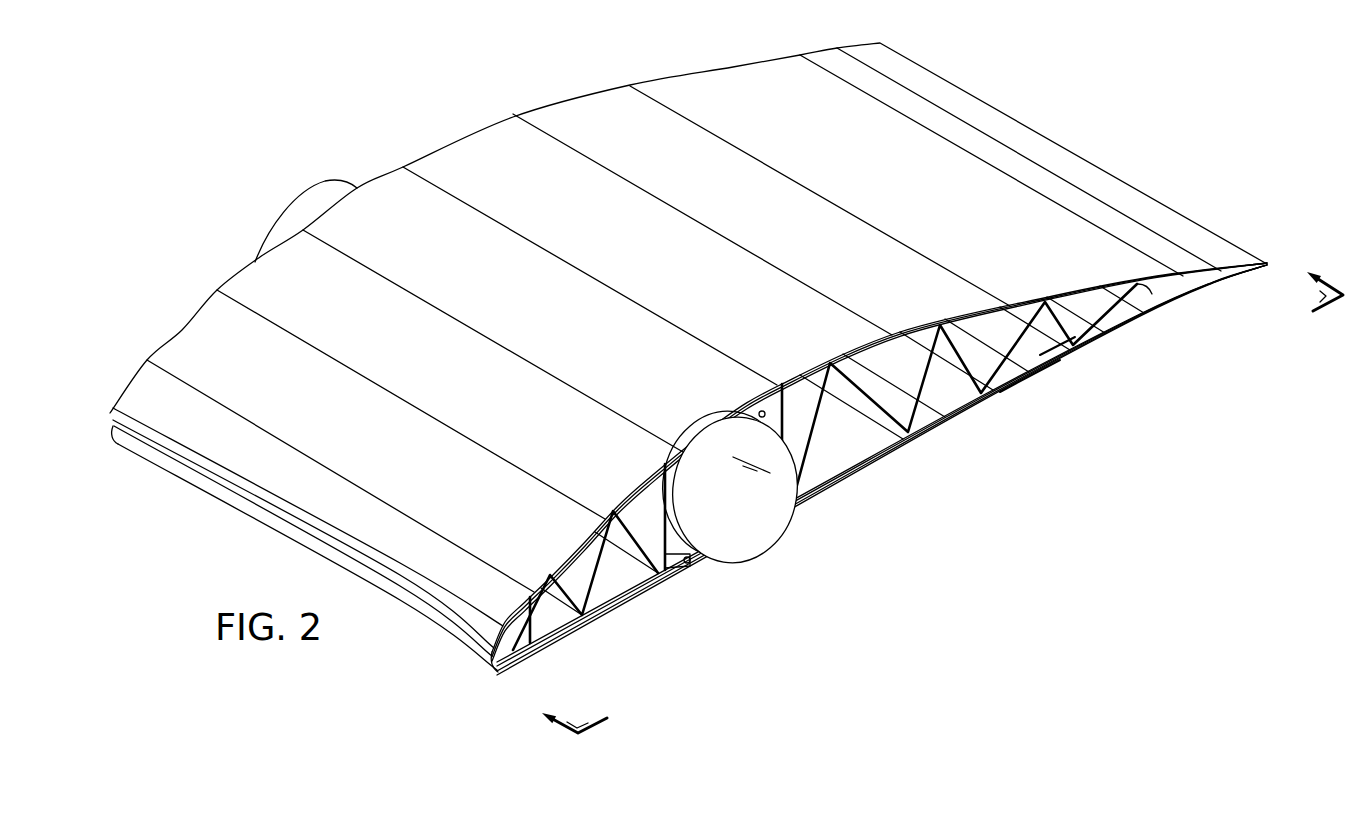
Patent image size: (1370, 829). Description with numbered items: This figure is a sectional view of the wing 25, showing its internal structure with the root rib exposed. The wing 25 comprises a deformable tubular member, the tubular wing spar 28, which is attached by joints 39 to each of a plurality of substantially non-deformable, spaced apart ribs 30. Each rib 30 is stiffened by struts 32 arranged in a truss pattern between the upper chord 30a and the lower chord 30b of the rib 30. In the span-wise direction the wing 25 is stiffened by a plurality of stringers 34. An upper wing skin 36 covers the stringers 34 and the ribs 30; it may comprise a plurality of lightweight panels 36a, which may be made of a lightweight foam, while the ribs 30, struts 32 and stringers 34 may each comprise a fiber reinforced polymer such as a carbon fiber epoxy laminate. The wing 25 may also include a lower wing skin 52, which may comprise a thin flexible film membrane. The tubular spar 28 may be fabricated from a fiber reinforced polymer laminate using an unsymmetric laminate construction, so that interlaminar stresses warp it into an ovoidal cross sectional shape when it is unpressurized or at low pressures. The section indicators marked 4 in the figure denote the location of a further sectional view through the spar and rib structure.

The wing 25 is at (218, 90).
The tubular wing spar 28 is at (345, 183).
The ribs 30 is at (888, 468).
The upper chord 30a is at (643, 476).
The lower chord 30b is at (945, 420).
The struts 32 is at (1027, 370).
The stringers 34 is at (1032, 352).
The upper wing skin 36 is at (1070, 148).
The lightweight panels 36a is at (455, 150).
The joints 39 is at (684, 585).
The lower wing skin 52 is at (1058, 335).
The section line 4- 4 is at (933, 493).